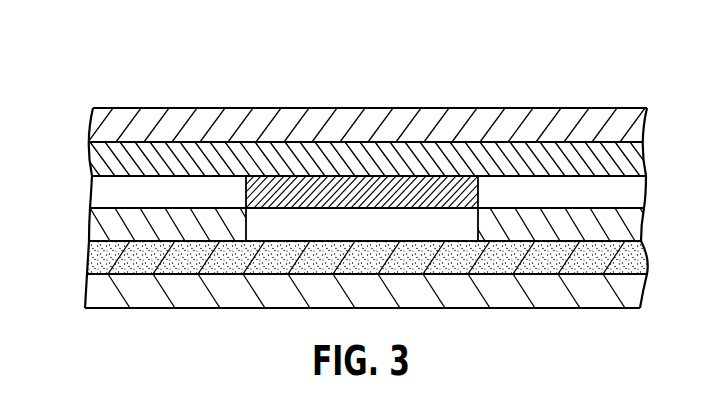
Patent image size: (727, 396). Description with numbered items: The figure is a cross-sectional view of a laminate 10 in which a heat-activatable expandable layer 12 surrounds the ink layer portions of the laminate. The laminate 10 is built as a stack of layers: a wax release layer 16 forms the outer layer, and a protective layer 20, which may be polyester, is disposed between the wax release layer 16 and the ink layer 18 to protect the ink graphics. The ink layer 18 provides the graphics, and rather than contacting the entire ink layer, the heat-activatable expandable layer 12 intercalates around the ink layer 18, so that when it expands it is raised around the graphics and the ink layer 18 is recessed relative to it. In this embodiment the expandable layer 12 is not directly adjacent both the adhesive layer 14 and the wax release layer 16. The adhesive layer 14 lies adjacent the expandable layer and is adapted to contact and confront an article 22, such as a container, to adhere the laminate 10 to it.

The laminate 10 is at (95, 68).
The heat-activatable expandable layer 12 is at (89, 226).
The adhesive layer 14 is at (89, 259).
The wax release layer 16 is at (91, 122).
The ink layer 18 is at (246, 191).
The protective layer 20 is at (89, 157).
The article 22 is at (87, 290).